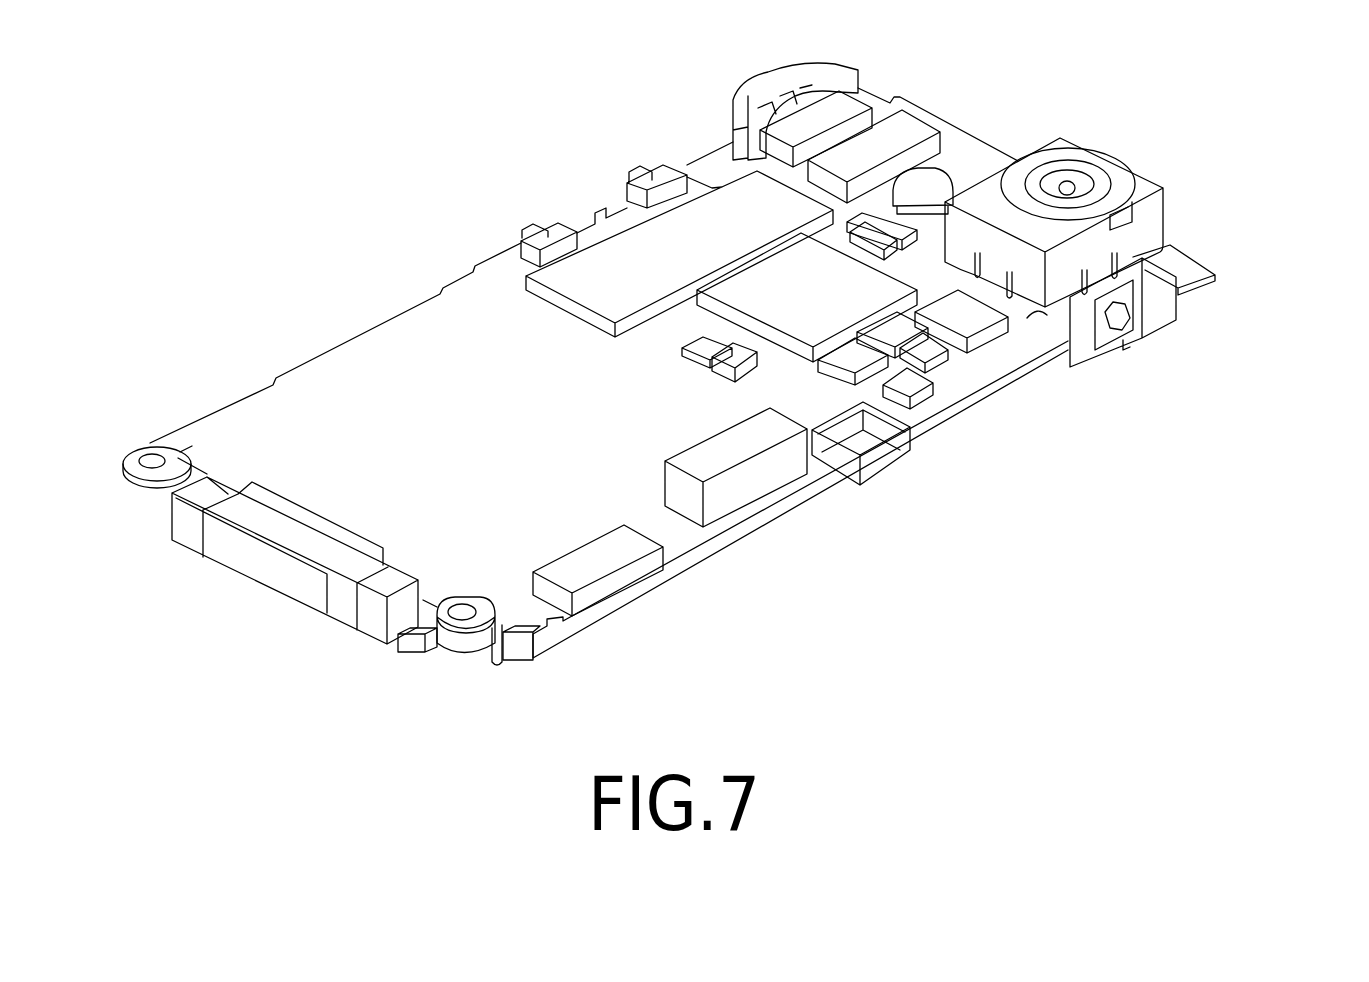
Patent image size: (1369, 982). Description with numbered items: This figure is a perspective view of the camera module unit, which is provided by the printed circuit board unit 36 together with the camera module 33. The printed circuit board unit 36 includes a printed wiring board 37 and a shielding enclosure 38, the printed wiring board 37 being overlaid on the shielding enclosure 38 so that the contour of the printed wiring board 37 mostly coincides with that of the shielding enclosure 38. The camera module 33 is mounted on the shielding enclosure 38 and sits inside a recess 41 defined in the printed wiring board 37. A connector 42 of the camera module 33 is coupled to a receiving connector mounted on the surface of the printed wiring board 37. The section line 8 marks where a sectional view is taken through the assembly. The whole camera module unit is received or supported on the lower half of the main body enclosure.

The camera module 33 is at (1112, 163).
The circuit board assembly 36 is at (107, 355).
The printed circuit board 37 is at (356, 338).
The electronic component 38 is at (921, 437).
The connector 41 is at (1030, 312).
The integrated circuit chip 42 is at (858, 223).
The section line for FIG. 8 is at (1238, 163).